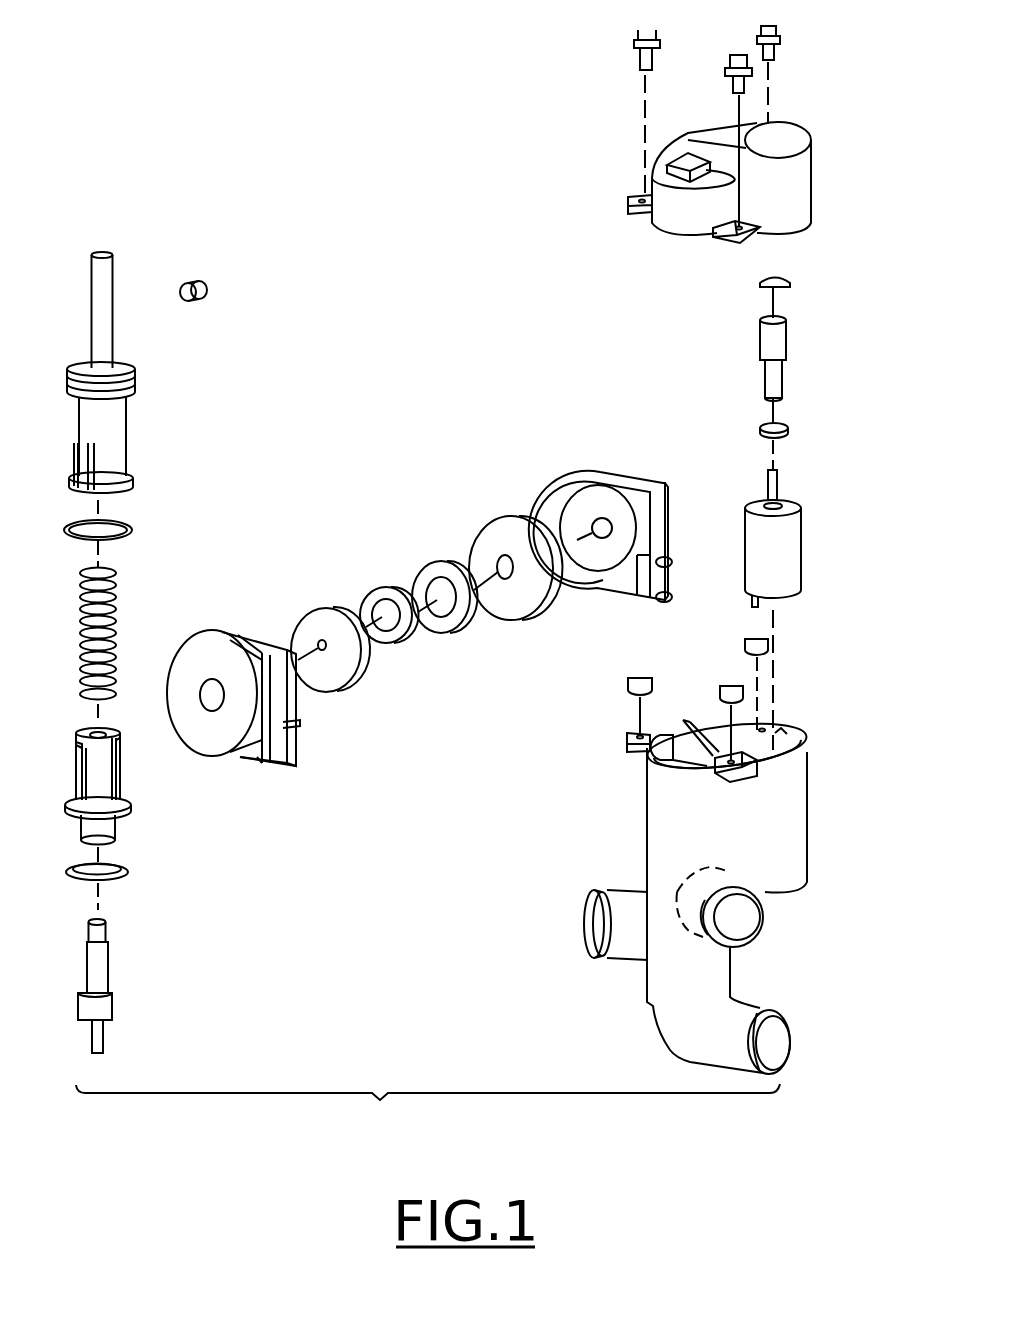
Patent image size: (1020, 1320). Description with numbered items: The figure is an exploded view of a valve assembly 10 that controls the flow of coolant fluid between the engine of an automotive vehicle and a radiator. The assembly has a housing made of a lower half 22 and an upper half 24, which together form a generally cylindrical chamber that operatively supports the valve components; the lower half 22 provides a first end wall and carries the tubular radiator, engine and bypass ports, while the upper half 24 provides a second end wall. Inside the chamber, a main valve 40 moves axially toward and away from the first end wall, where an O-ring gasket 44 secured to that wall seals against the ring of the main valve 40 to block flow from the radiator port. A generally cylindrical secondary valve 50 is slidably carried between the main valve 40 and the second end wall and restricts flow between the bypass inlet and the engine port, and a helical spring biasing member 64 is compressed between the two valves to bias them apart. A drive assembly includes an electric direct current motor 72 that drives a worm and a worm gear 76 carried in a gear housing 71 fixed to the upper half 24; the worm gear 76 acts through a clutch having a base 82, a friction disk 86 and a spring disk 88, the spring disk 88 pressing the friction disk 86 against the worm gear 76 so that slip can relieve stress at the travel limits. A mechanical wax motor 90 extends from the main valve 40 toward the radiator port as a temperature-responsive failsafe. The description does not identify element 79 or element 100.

The valve assembly 10 is at (254, 40).
The lower half 22 is at (783, 890).
The upper half 24 is at (784, 136).
The main valve 40 is at (122, 800).
The O-ring gasket 44 is at (118, 868).
The secondary valve 50 is at (125, 420).
The biasing member 64 is at (118, 597).
The gear housing 71 is at (236, 634).
The electric direct current motor 72 is at (800, 526).
The worm gear 76 is at (480, 526).
The actuator 79 is at (758, 340).
The base 82 is at (318, 606).
The friction disk 86 is at (420, 565).
The spring disk 88 is at (371, 588).
The wax motor 90 is at (113, 1000).
The o-ring 100 is at (130, 523).